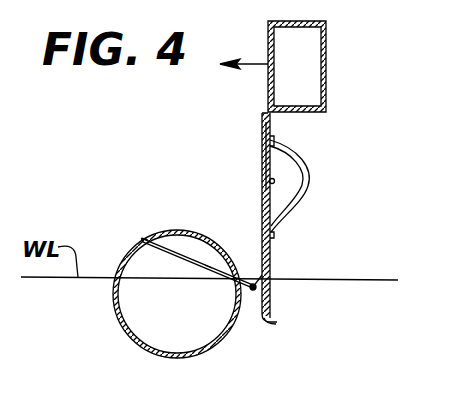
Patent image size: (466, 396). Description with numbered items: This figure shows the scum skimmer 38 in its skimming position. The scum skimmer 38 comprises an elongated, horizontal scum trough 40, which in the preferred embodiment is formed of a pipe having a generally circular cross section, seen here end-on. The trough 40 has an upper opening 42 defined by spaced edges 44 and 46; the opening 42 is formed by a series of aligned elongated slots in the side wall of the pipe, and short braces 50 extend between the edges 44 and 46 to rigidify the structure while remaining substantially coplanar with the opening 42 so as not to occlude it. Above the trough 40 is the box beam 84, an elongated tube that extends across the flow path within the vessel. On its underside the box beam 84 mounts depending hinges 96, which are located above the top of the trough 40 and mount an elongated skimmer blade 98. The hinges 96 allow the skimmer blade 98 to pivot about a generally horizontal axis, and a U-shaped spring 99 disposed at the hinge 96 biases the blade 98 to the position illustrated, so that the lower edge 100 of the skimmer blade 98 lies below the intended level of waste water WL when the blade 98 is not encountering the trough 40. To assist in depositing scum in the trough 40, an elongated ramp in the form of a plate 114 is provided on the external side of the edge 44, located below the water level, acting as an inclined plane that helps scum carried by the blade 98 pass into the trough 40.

The scum skimmer 38 is at (111, 300).
The scum trough 40 is at (225, 338).
The upper opening 42 is at (178, 240).
The edge 44 is at (236, 264).
The edge 46 is at (145, 238).
The brace 50 is at (207, 250).
The box beam 84 is at (326, 66).
The hinge 96 is at (276, 163).
The skimmer blade 98 is at (276, 246).
The U-shaped spring 99 is at (312, 183).
The lower edge 100 is at (276, 324).
The plate 114 is at (273, 262).